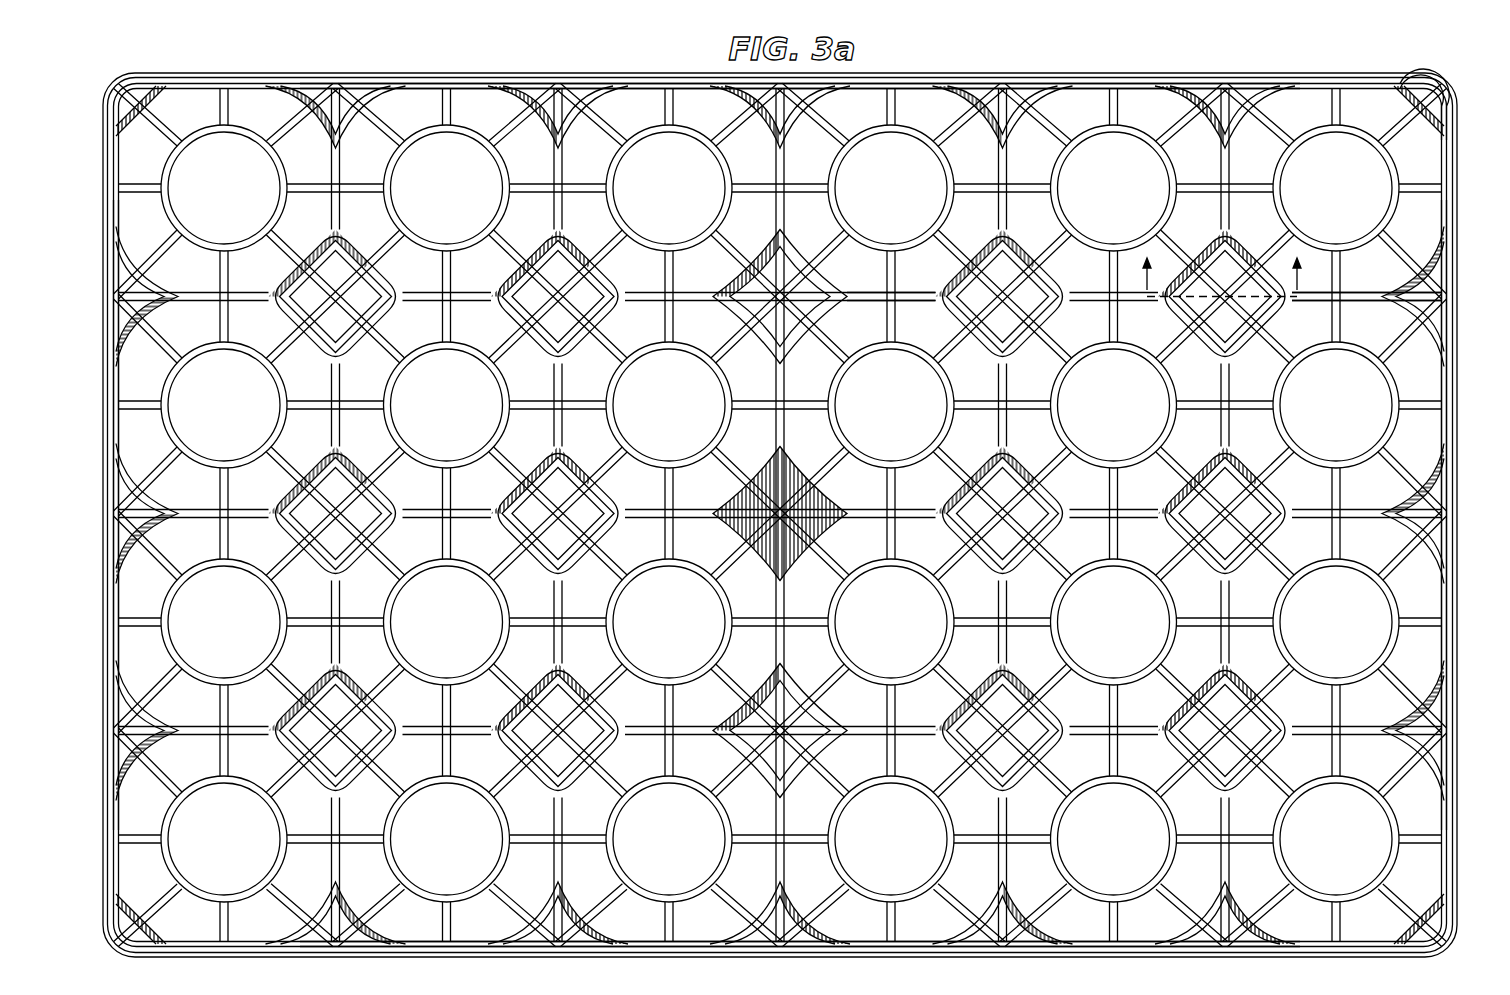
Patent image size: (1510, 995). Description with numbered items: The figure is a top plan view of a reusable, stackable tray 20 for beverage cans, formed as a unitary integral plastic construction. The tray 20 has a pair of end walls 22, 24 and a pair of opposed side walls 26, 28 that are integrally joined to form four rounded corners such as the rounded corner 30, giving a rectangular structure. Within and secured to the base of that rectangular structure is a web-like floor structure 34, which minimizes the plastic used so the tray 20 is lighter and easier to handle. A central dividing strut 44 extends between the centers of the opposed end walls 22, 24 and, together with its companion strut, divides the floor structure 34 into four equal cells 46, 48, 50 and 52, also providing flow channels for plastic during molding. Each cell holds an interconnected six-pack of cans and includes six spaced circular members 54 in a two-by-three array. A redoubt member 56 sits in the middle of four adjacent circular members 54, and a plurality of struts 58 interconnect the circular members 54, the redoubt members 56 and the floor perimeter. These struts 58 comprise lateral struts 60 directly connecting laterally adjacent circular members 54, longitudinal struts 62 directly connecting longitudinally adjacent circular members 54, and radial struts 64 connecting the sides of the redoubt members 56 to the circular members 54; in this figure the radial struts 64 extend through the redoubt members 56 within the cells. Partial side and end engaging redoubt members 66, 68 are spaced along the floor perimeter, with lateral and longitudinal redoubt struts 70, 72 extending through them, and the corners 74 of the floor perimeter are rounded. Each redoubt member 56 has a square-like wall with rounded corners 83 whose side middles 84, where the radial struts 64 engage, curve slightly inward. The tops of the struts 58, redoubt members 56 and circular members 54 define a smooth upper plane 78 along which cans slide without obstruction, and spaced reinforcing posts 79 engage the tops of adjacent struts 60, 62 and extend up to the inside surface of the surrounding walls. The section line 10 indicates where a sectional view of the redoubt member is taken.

The section line 10- 10 is at (1224, 276).
The tray 20 is at (1462, 406).
The end wall 22 is at (108, 386).
The end wall 24 is at (1460, 498).
The side wall 26 is at (985, 82).
The side wall 28 is at (690, 948).
The rounded corner 30 is at (1462, 85).
The floor structure 34 is at (650, 346).
The central dividing strut 44 is at (456, 512).
The cell 46 is at (236, 166).
The cell 48 is at (226, 866).
The cell 50 is at (1338, 166).
The cell 52 is at (1358, 836).
The circular member 54 is at (1085, 357).
The redoubt member 56 is at (962, 302).
The strut 58 is at (1328, 303).
The lateral strut 60 is at (430, 716).
The longitudinal strut 62 is at (1210, 413).
The radial strut 64 is at (1178, 345).
The partial side engaging redoubt member 66 is at (1240, 95).
The partial end engaging redoubt member 68 is at (1402, 332).
The lateral redoubt strut 70 is at (335, 905).
The longitudinal redoubt strut 72 is at (1405, 745).
The corner of the floor perimeter structure 74 is at (1440, 128).
The upper plane 78 is at (880, 238).
The reinforcing post 79 is at (560, 90).
The rounded corner 83 is at (1243, 345).
The middle of the side 84 is at (1177, 348).